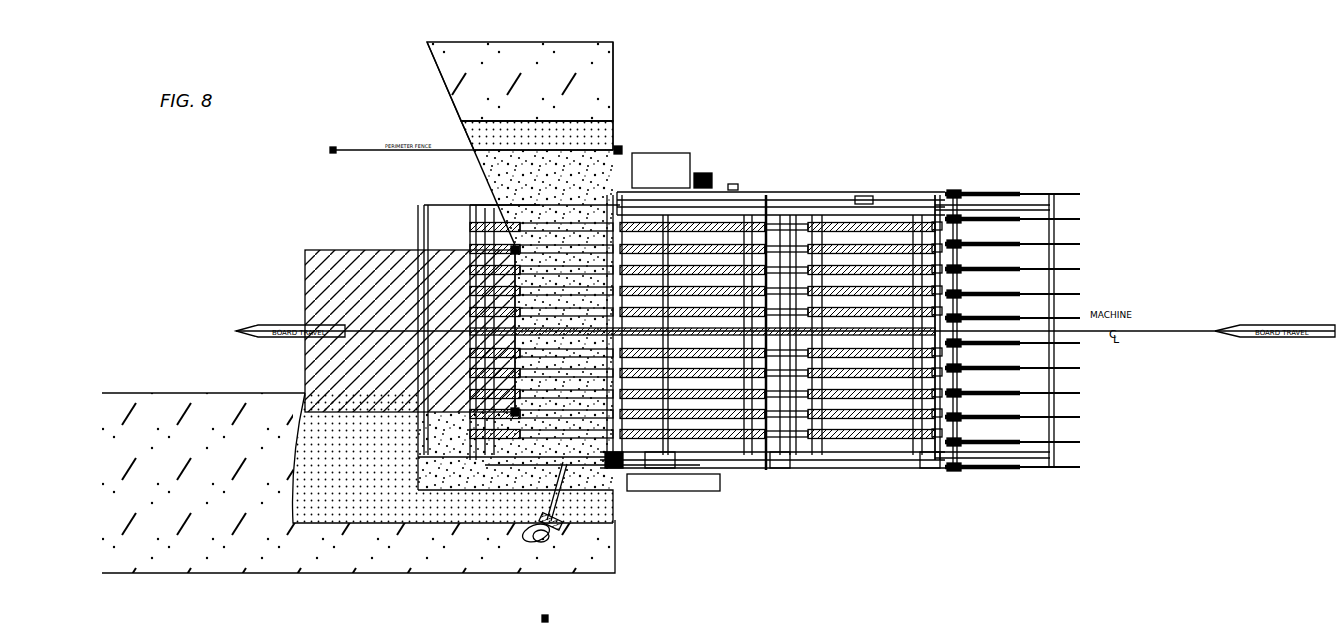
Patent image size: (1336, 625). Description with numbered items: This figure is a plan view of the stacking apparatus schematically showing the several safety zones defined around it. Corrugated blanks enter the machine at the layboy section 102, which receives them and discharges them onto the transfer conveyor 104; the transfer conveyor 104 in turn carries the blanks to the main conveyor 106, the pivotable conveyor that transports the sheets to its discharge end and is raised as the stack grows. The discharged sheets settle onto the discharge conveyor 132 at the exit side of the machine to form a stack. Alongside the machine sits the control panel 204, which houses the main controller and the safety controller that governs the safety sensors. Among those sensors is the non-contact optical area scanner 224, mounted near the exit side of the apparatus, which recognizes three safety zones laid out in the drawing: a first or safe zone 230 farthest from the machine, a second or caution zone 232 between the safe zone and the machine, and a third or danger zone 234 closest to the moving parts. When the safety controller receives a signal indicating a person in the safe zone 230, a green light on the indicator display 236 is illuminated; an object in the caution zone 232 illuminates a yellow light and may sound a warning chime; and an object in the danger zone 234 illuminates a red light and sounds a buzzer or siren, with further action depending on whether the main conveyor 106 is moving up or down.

The layboy section 102 is at (1014, 172).
The transfer conveyor 104 is at (863, 188).
The main conveyor 106 is at (753, 478).
The discharge conveyor 132 is at (360, 250).
The control panel 204 is at (686, 492).
The non-contact optical area scanner 224 is at (622, 470).
The safe zone 230 is at (192, 405).
The caution zone 232 is at (613, 145).
The danger zone 234 is at (497, 180).
The indicator display 236 is at (545, 615).